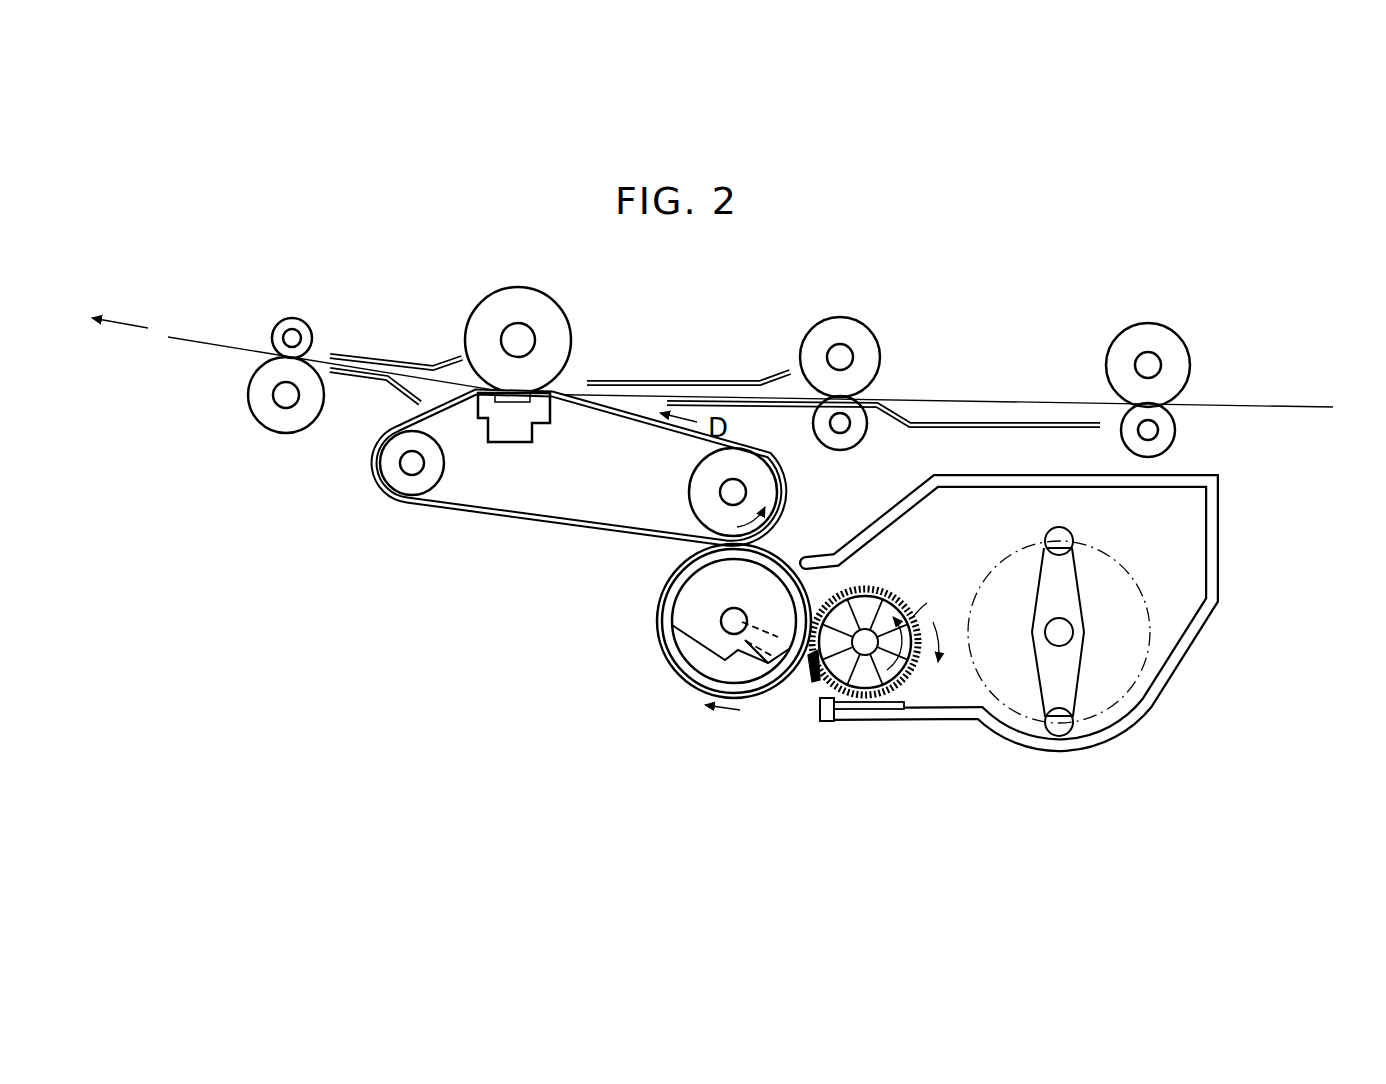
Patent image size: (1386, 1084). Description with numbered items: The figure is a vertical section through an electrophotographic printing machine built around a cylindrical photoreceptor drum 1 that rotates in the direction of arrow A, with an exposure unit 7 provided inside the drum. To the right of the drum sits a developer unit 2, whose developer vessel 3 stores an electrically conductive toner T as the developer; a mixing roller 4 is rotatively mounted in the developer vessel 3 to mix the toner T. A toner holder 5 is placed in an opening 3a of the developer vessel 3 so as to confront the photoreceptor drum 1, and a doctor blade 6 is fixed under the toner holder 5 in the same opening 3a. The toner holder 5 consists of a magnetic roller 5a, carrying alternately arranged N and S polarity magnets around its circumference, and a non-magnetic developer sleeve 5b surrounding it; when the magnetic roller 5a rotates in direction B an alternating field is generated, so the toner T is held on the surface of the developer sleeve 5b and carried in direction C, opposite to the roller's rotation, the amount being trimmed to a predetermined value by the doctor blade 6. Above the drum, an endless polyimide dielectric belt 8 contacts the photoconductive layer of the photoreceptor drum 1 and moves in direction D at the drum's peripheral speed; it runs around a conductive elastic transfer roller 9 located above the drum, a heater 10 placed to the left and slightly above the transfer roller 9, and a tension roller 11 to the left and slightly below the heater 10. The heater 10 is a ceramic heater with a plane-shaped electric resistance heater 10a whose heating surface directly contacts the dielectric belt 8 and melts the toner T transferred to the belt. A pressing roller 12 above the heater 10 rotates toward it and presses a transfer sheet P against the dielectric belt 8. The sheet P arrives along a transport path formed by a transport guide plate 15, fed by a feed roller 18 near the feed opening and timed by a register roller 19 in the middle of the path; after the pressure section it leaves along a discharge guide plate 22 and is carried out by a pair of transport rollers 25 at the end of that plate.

The photoreceptor drum 1 is at (677, 670).
The developer unit 2 is at (1002, 650).
The developer vessel 3 is at (1182, 655).
The opening 3a is at (820, 700).
The mixing roller 4 is at (1068, 678).
The toner holder 5 is at (880, 639).
The magnetic roller 5a is at (897, 687).
The developer sleeve 5b is at (913, 683).
The doctor blade 6 is at (838, 720).
The exposure unit 7 is at (683, 613).
The dielectric belt 8 is at (508, 513).
The transfer roller 9 is at (700, 485).
The heater 10 is at (513, 427).
The electric resistance heater 10a is at (528, 402).
The tension roller 11 is at (398, 480).
The pressing roller 12 is at (537, 310).
The transport guide plate 15 is at (717, 388).
The feed roller 18 is at (1168, 427).
The register roller 19 is at (858, 423).
The discharge guide plate 22 is at (380, 378).
The pair of transport rollers 25 is at (258, 380).
The transfer sheet P is at (1032, 398).
The electrically conductive toner T is at (813, 673).